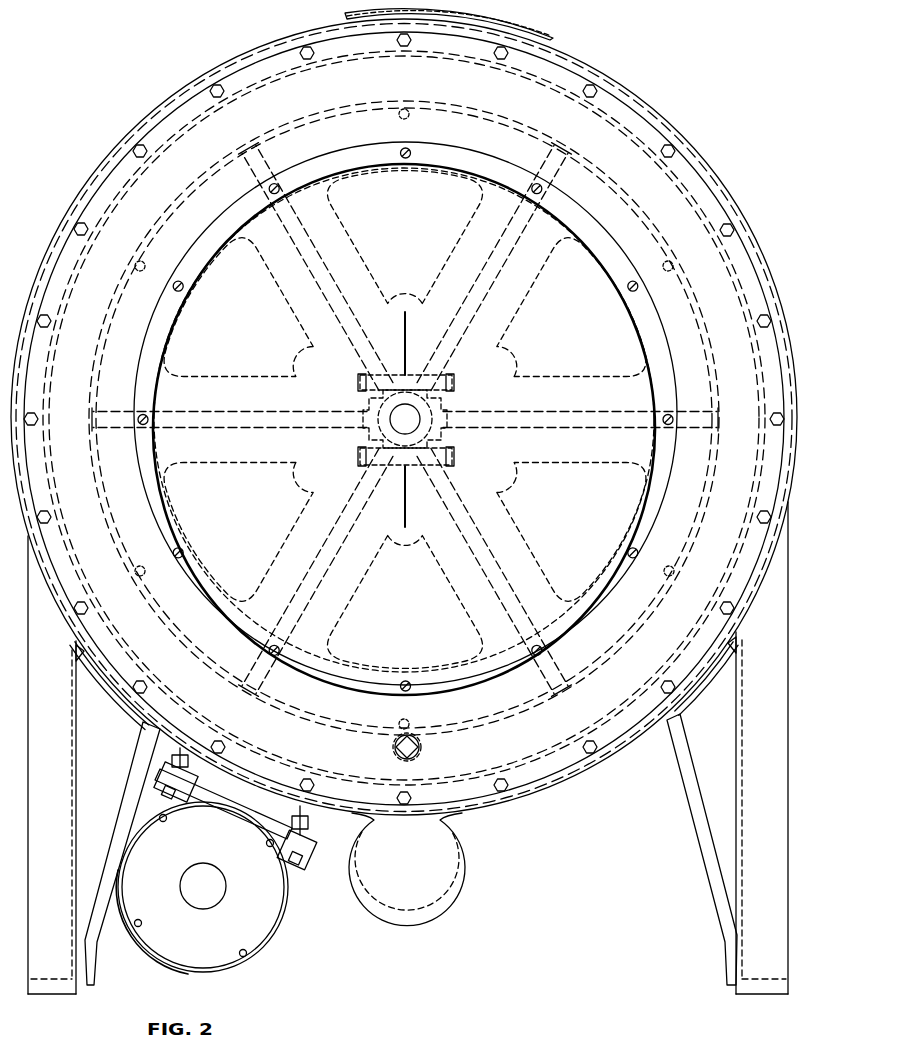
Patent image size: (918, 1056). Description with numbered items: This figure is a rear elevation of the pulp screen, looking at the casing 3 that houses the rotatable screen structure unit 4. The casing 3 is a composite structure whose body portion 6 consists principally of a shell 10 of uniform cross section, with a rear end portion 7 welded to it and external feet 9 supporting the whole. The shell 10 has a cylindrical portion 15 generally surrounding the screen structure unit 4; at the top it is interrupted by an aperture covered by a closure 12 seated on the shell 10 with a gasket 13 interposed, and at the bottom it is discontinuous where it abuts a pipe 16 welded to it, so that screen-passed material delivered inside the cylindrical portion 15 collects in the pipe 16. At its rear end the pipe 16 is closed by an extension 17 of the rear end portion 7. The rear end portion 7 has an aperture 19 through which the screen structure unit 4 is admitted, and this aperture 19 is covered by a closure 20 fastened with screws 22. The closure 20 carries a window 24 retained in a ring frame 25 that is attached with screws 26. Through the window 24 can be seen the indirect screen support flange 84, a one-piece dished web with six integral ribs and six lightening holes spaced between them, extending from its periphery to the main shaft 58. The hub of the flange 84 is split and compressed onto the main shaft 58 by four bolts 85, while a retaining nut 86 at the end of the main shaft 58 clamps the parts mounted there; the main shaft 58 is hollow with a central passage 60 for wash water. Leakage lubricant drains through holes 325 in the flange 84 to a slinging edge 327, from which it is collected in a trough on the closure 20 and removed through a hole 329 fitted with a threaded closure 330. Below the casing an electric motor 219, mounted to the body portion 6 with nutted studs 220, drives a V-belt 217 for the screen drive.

The casing 3 is at (147, 112).
The screen structure unit 4 is at (582, 147).
The body portion 6 is at (608, 73).
The rear end portion 7 is at (670, 128).
The external feet 9 is at (30, 817).
The shell 10 is at (588, 63).
The closure 12 is at (500, 22).
The gasket 13 is at (527, 37).
The cylindrical portion 15 is at (513, 806).
The pipe 16 is at (463, 888).
The extension 17 is at (457, 863).
The aperture 19 is at (273, 760).
The closure 20 is at (693, 163).
The screws 22 is at (215, 99).
The window 24 is at (587, 254).
The ring frame 25 is at (575, 206).
The screws 26 is at (409, 148).
The main shaft 58 is at (443, 430).
The central passage 60 is at (390, 418).
The indirect screen support flange 84 is at (512, 296).
The bolts 85 is at (362, 380).
The retaining nut 86 is at (447, 397).
The V-belt 217 is at (193, 778).
The electric motor 219 is at (222, 963).
The nutted studs 220 is at (167, 797).
The holes 325 is at (669, 566).
The slinging edge 327 is at (525, 720).
The hole 329 is at (397, 753).
The threaded closure 330 is at (418, 752).